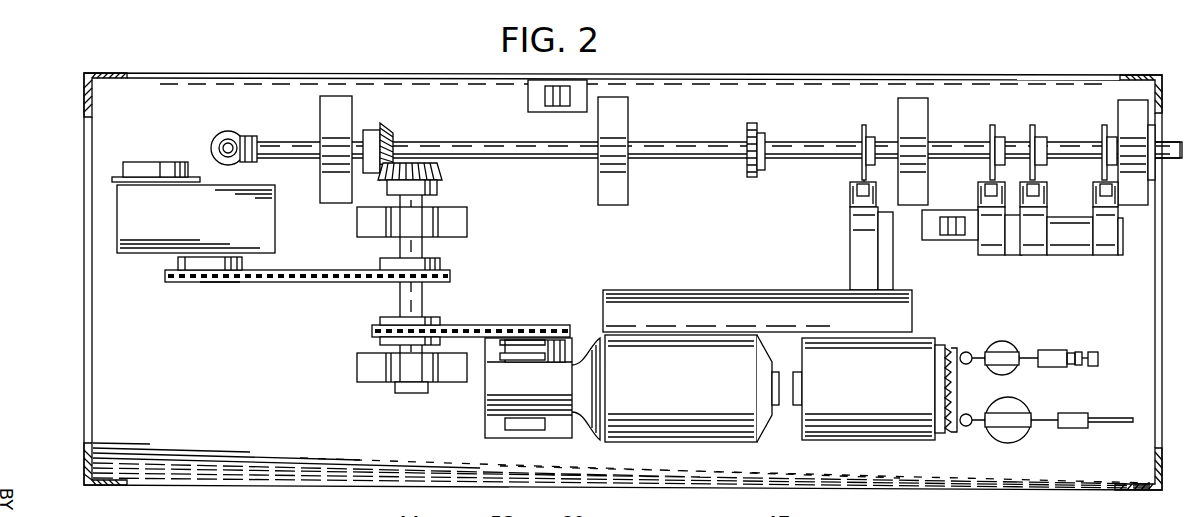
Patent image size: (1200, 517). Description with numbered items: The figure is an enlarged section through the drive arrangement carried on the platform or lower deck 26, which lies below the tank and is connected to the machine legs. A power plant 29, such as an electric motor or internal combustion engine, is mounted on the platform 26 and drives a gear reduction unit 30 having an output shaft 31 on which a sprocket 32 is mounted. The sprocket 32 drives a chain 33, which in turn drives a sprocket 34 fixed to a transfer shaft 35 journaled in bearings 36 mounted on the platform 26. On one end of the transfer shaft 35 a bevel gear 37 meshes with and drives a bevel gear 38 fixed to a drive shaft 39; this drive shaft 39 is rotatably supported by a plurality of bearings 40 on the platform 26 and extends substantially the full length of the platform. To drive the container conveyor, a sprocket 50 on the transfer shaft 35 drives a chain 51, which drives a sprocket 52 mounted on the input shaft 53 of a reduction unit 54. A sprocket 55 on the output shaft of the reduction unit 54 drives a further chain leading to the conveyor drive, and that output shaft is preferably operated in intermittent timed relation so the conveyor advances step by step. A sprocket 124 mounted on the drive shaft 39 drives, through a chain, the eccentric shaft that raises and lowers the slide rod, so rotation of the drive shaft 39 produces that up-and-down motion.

The platform 26 is at (318, 473).
The power plant 29 is at (678, 430).
The gear reduction unit 30 is at (505, 393).
The output shaft 31 is at (545, 348).
The sprocket 32 is at (535, 345).
The chain 33 is at (486, 325).
The sprocket 34 is at (372, 330).
The transfer shaft 35 is at (418, 300).
The bearings 36 is at (420, 222).
The bevel gear 37 is at (430, 170).
The bevel gear 38 is at (392, 132).
The drive shaft 39 is at (492, 148).
The bearings 40 is at (332, 140).
The sprocket 50 is at (400, 280).
The chain 51 is at (328, 282).
The sprocket 52 is at (219, 282).
The input shaft 53 is at (205, 258).
The reduction unit 54 is at (153, 245).
The sprocket 55 is at (163, 181).
The sprocket 124 is at (751, 178).